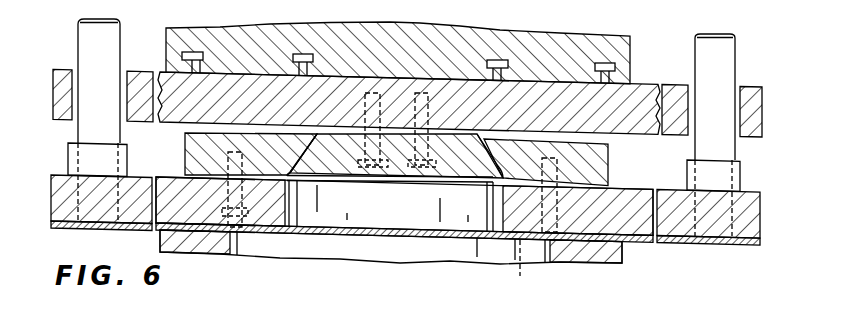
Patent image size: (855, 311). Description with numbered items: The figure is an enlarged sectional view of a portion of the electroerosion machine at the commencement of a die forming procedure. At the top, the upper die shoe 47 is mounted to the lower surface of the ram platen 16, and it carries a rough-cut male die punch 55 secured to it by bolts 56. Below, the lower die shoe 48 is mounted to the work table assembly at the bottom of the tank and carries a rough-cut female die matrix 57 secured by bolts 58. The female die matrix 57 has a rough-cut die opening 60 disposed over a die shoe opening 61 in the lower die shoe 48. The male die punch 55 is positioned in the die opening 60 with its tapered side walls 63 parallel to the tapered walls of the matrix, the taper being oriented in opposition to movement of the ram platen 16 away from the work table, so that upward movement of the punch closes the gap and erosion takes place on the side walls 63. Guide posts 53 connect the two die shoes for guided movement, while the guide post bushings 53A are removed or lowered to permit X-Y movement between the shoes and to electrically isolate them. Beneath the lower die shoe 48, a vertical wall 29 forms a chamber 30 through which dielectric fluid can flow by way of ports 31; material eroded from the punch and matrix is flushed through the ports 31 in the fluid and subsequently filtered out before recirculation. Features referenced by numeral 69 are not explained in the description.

The ram platen 16 is at (610, 43).
The upper die shoe 47 is at (640, 90).
The guide posts 53 is at (122, 33).
The guide post bushings 53A is at (128, 163).
The female die matrix 57 is at (610, 164).
The die opening 60 is at (383, 177).
The bolts 56 is at (403, 176).
The membrane 69 is at (317, 163).
The male die punch 55 is at (298, 162).
The tapered side walls 63 is at (484, 183).
The die shoe opening 61 is at (423, 215).
The lower die shoe 48 is at (660, 239).
The chamber 30 is at (507, 258).
The ports 31 is at (400, 239).
The vertical wall 29 is at (623, 254).
The bolts 58 is at (256, 228).